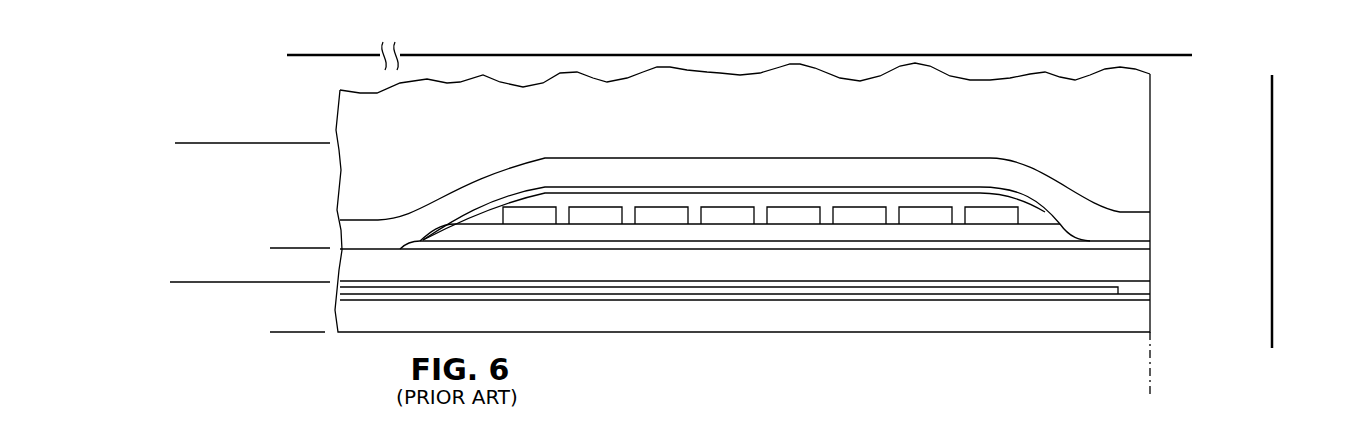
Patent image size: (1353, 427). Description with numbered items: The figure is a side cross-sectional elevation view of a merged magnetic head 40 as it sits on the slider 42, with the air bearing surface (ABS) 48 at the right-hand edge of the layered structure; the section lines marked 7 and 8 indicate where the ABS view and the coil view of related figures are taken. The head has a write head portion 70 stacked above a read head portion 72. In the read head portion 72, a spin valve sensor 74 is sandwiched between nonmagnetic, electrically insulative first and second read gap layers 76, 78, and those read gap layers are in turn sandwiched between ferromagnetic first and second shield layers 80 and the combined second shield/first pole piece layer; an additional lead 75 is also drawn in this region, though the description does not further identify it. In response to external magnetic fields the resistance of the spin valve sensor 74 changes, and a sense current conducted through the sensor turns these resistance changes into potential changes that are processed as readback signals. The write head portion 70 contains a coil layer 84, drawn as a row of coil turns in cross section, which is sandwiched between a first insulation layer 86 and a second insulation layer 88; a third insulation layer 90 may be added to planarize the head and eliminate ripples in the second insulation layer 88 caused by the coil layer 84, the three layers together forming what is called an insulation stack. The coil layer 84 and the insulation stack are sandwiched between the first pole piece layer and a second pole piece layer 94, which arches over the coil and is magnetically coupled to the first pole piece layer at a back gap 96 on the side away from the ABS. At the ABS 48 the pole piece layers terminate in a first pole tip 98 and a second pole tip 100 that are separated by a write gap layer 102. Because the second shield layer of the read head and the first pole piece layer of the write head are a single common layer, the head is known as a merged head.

The section line 7- 7 is at (1280, 83).
The section line 8- 8 is at (295, 50).
The merged magnetic head 40 is at (313, 97).
The slider 42 is at (1133, 109).
The air bearing surface (ABS) 48 is at (1157, 380).
The write head portion 70 is at (188, 150).
The read head portion 72 is at (283, 339).
The spin valve sensor 74 is at (1150, 288).
The second read gap layer 75 is at (752, 282).
The first read gap layer 76 is at (680, 282).
The second read gap layer 78 is at (733, 282).
The first shield layer 80 is at (884, 308).
The coil layer 84 is at (792, 210).
The first insulation layer 86 is at (611, 232).
The second insulation layer 88 is at (1035, 213).
The third insulation layer 90 is at (568, 190).
The second pole piece layer 94 is at (903, 168).
The back gap 96 is at (373, 248).
The first pole tip 98 is at (1150, 262).
The second pole tip 100 is at (1150, 218).
The write gap layer 102 is at (1150, 242).